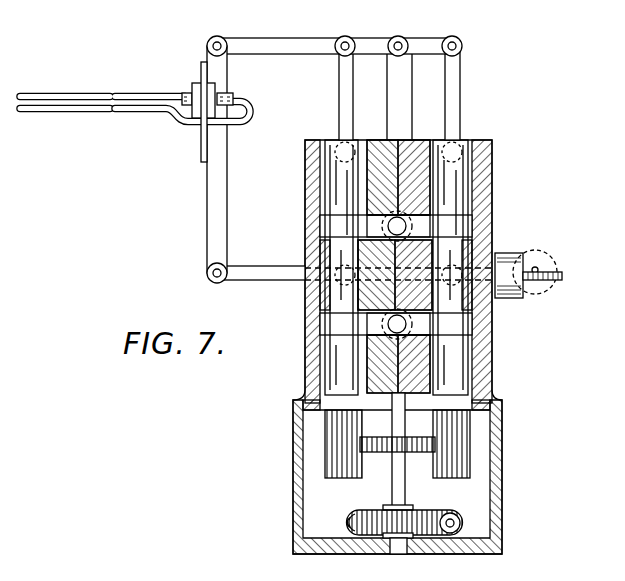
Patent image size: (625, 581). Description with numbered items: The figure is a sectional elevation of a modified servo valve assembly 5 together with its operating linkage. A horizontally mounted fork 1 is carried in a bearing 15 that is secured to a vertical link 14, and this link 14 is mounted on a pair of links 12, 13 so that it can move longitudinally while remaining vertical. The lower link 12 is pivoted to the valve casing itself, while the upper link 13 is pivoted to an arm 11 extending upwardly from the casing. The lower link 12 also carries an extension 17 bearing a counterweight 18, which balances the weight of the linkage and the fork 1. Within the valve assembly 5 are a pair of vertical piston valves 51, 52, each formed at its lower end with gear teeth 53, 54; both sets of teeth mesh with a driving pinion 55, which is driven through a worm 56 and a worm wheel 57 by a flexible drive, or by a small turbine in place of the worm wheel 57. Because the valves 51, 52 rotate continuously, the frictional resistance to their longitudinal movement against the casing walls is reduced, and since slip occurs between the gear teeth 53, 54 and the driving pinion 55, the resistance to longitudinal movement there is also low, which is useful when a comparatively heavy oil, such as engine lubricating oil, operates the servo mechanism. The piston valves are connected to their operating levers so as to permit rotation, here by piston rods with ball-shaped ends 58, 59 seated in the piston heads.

The fork 1 is at (88, 97).
The valve assembly 5 is at (493, 156).
The arm 11 is at (408, 42).
The link 12 is at (278, 268).
The link 13 is at (283, 54).
The link 14 is at (213, 207).
The bearing 15 is at (193, 87).
The extension 17 is at (554, 282).
The counterweight 18 is at (505, 256).
The piston valve 51 is at (335, 182).
The piston valve 52 is at (460, 183).
The gear teeth 53 is at (335, 447).
The gear teeth 54 is at (458, 447).
The driving pinion 55 is at (382, 452).
The worm 56 is at (460, 522).
The worm wheel 57 is at (424, 540).
The ball-shaped end 58 is at (335, 140).
The ball-shaped end 59 is at (462, 140).